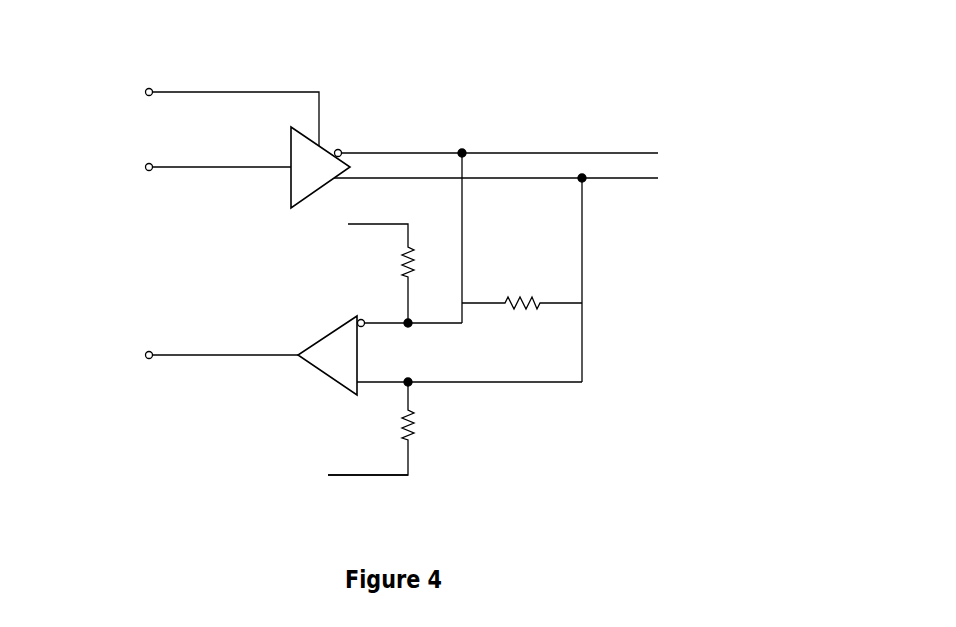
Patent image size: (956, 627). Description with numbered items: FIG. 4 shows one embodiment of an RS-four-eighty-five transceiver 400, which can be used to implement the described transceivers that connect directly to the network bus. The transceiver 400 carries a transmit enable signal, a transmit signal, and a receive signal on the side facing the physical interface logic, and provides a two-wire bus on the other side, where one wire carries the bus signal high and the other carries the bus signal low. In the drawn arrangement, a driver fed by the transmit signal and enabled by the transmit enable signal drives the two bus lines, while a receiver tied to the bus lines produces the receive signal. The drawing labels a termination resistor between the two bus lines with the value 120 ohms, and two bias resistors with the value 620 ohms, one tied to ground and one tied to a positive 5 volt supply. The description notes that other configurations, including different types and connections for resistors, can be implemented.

The RS-485 transceiver 400 is at (592, 60).
The 120 ohm termination resistor 120 is at (522, 317).
The 620 ohm bias resistors 620 is at (371, 349).
The +5V supply 5 is at (343, 477).